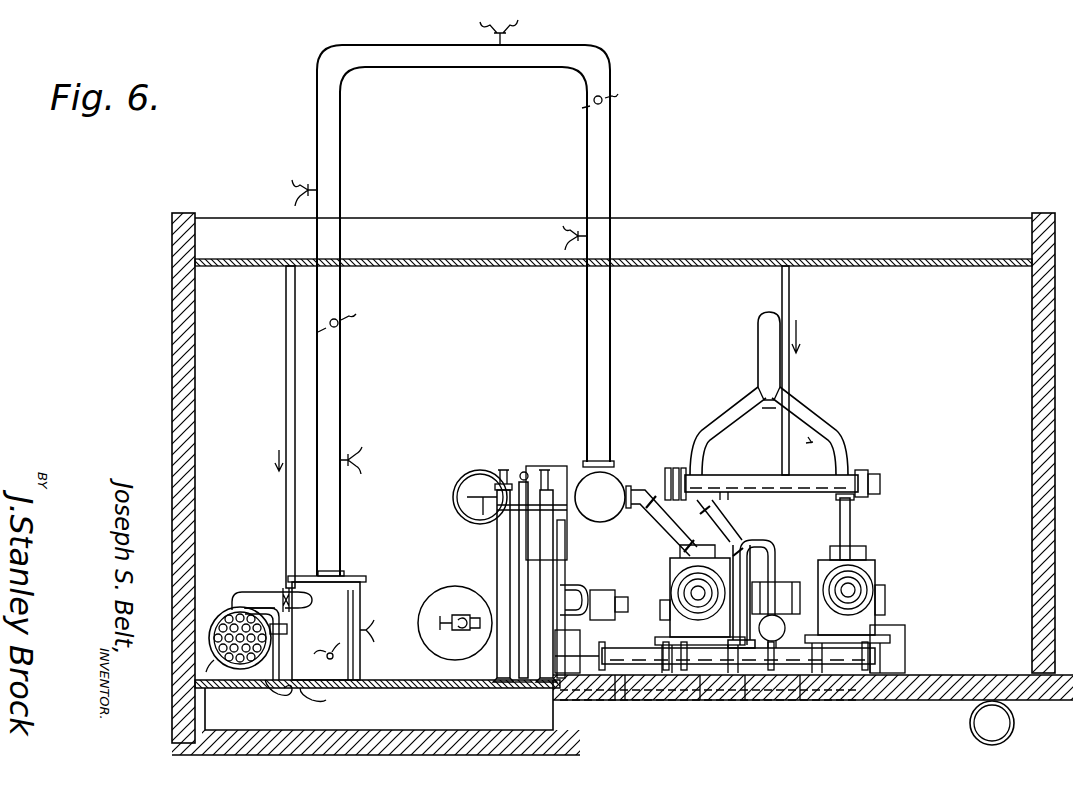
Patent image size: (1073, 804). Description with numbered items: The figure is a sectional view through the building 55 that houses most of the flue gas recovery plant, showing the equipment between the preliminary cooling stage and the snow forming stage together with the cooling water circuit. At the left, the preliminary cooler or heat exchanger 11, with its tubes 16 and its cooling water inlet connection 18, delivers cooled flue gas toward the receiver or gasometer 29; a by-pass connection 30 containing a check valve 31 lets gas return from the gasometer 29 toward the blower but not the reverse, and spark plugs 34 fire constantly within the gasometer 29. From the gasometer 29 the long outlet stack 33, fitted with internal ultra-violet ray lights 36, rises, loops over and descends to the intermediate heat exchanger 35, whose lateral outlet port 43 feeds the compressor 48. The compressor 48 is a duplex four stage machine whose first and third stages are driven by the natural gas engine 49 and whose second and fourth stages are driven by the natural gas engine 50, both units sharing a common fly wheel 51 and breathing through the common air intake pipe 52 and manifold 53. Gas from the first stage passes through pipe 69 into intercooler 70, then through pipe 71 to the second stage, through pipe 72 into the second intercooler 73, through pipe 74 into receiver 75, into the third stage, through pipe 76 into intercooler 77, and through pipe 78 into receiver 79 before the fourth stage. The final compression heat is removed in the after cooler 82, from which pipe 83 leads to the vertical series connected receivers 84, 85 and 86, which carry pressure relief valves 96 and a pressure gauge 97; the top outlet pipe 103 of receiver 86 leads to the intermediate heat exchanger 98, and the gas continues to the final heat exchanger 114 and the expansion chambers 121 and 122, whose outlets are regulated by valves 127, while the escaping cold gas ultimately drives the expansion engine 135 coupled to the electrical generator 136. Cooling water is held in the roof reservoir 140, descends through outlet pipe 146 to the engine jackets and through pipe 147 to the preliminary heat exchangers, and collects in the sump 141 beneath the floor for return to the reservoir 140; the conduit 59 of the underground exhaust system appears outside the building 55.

The preliminary cooler or heat exchanger 11 is at (224, 624).
The tubes 16 is at (206, 670).
The cooling water inlet connection 18 is at (283, 653).
The receiver or gasometer 29 is at (350, 602).
The by-pass connection 30 is at (256, 584).
The check valve 31 is at (273, 592).
The outlet stack 33 is at (333, 165).
The spark plugs 34 is at (337, 656).
The intermediate heat exchanger 35 is at (614, 482).
The ultra-violet ray lights 36 is at (606, 103).
The lateral outlet port 43 is at (632, 515).
The compressor 48 is at (876, 572).
The internal combustion natural gas engine 49 is at (690, 557).
The internal combustion natural gas engine 50 is at (864, 555).
The fly wheel 51 is at (768, 512).
The air intake pipe 52 is at (758, 344).
The manifold 53 is at (712, 436).
The building 55 is at (172, 392).
The conduit 59 is at (1016, 726).
The pipe 69 is at (725, 542).
The intercooler 70 is at (755, 476).
The pipe 71 is at (852, 528).
The pipe 72 is at (806, 680).
The second intercooler 73 is at (742, 680).
The pipe 74 is at (777, 578).
The receiver 75 is at (775, 546).
The pipe 76 is at (680, 622).
The intercooler 77 is at (698, 675).
The pipe 78 is at (852, 592).
The receiver 79 is at (872, 632).
The after cooler 82 is at (636, 675).
The pipe 83 is at (582, 690).
The receiver 84 is at (547, 546).
The receiver 85 is at (497, 538).
The receiver 86 is at (505, 555).
The pressure relief valves 96 is at (502, 470).
The pressure gauge 97 is at (528, 470).
The intermediate heat exchanger 98 is at (468, 490).
The top outlet pipe 103 is at (478, 484).
The final heat exchanger 114 is at (608, 497).
The expansion chamber 121 is at (576, 642).
The expansion chamber 122 is at (455, 623).
The valves 127 is at (455, 615).
The expansion engine 135 is at (548, 468).
The electrical generator 136 is at (585, 590).
The reservoir 140 is at (772, 247).
The collecting reservoir or sump 141 is at (622, 715).
The outlet pipe 146 is at (790, 380).
The pipe 147 is at (286, 386).